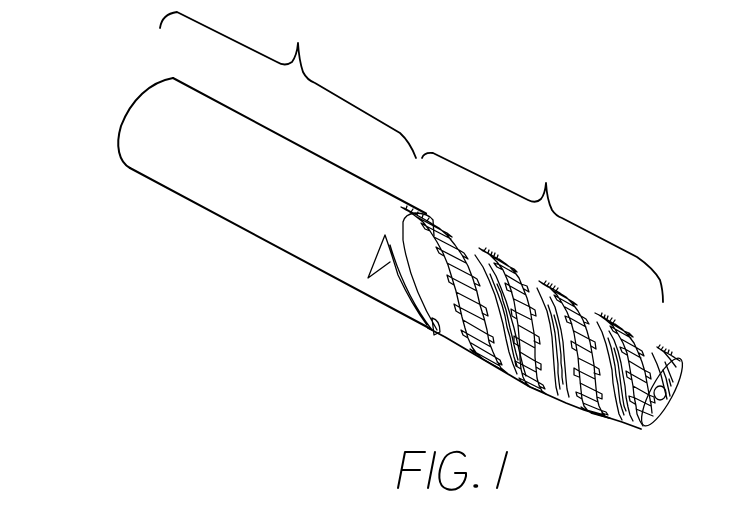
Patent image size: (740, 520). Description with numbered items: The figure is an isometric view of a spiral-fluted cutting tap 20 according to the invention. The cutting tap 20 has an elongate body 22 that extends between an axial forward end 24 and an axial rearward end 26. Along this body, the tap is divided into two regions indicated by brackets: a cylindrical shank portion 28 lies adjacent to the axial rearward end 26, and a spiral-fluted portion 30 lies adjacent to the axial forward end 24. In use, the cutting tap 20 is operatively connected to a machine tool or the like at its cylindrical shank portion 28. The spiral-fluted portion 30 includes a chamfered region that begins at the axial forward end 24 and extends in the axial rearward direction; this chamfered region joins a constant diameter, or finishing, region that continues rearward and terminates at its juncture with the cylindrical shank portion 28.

The cutting tap 20 is at (120, 203).
The elongate body 22 is at (272, 248).
The axial forward end 24 is at (670, 404).
The axial rearward end 26 is at (122, 114).
The cylindrical shank portion 28 is at (288, 85).
The spiral-fluted portion 30 is at (533, 319).